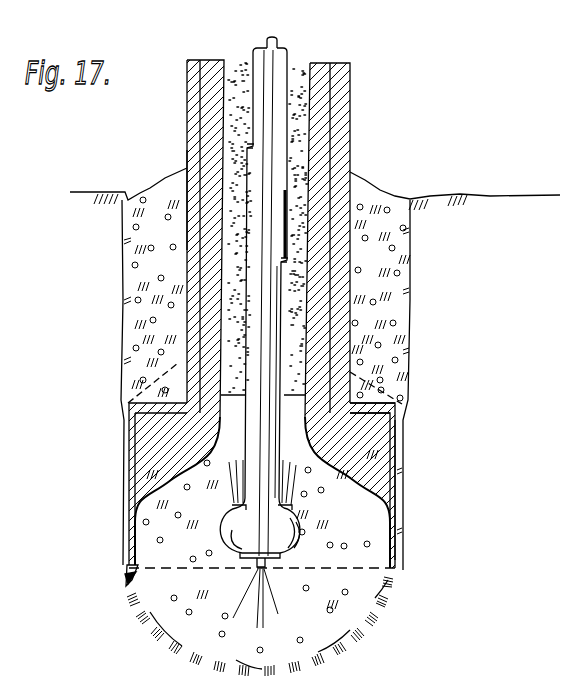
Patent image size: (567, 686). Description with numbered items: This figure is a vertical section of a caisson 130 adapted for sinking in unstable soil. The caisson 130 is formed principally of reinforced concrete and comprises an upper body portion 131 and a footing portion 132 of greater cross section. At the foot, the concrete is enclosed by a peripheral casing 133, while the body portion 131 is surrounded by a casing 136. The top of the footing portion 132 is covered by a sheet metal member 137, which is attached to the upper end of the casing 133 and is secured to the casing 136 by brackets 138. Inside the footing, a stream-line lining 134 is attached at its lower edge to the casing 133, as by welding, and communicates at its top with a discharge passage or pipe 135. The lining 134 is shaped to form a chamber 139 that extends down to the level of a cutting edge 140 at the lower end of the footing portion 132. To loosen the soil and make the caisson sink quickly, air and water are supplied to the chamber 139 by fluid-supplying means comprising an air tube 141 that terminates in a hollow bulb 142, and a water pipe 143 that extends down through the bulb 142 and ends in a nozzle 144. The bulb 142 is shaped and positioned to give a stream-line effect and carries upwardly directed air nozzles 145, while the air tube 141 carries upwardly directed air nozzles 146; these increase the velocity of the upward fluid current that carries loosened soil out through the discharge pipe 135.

The caisson 130 is at (352, 165).
The body portion 131 is at (197, 104).
The footing portion 132 is at (402, 455).
The peripheral casing 133 is at (394, 492).
The stream-line lining 134 is at (363, 490).
The discharge passage or pipe 135 is at (222, 313).
The casing 136 is at (185, 156).
The sheet metal member 137 is at (402, 409).
The brackets 138 is at (408, 386).
The chamber 139 is at (139, 523).
The cutting edge 140 is at (126, 582).
The air tube 141 is at (256, 52).
The hollow bulb 142 is at (240, 533).
The water pipe 143 is at (291, 41).
The nozzle 144 is at (265, 560).
The air nozzles 145 is at (229, 507).
The air nozzles 146 is at (250, 148).